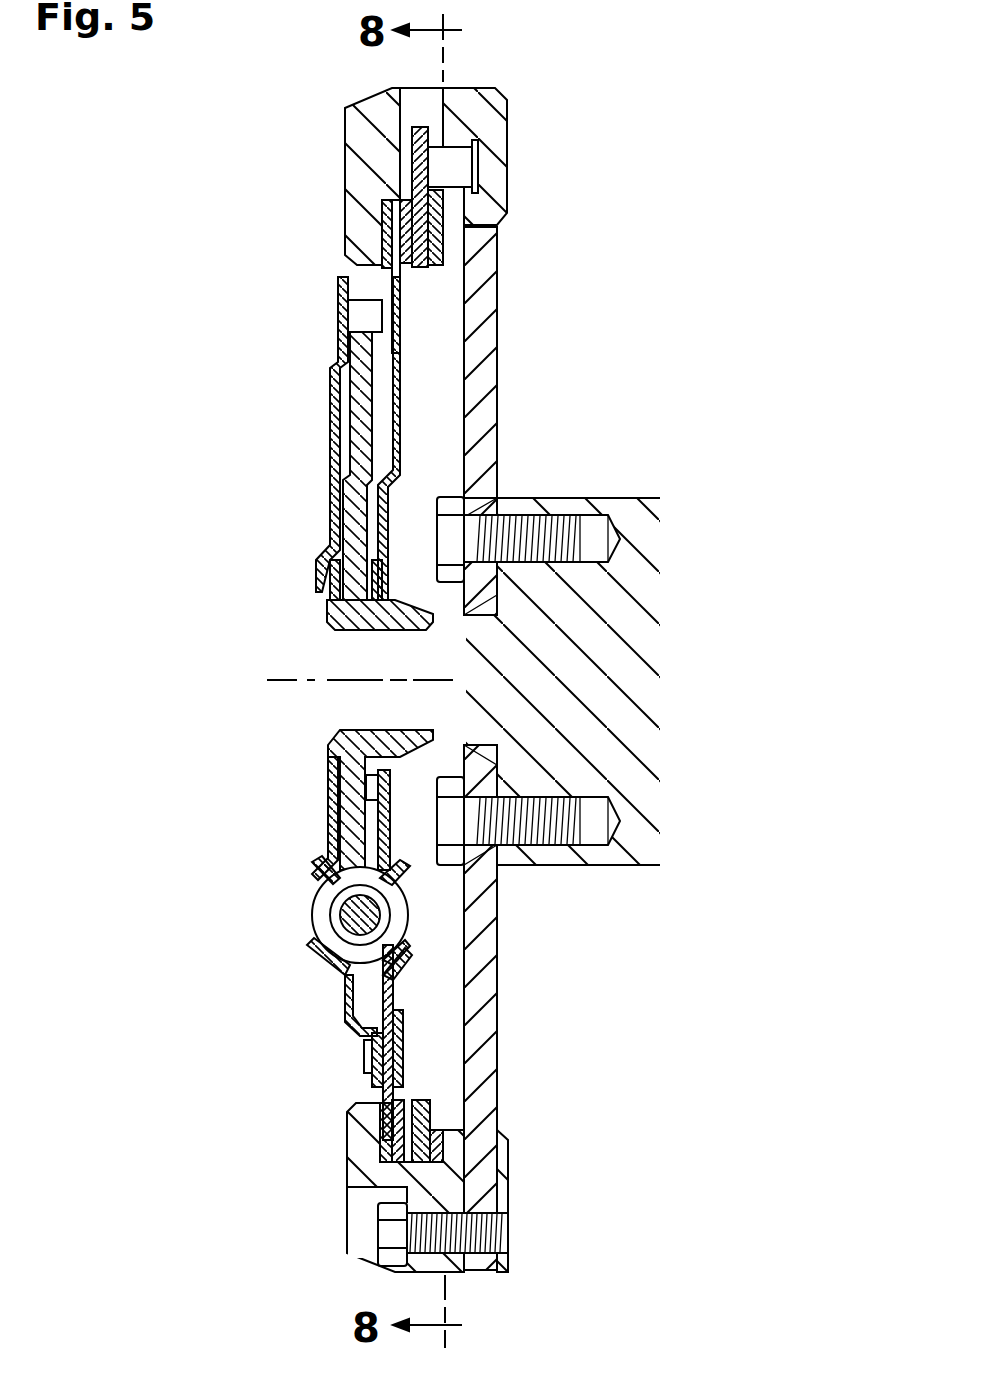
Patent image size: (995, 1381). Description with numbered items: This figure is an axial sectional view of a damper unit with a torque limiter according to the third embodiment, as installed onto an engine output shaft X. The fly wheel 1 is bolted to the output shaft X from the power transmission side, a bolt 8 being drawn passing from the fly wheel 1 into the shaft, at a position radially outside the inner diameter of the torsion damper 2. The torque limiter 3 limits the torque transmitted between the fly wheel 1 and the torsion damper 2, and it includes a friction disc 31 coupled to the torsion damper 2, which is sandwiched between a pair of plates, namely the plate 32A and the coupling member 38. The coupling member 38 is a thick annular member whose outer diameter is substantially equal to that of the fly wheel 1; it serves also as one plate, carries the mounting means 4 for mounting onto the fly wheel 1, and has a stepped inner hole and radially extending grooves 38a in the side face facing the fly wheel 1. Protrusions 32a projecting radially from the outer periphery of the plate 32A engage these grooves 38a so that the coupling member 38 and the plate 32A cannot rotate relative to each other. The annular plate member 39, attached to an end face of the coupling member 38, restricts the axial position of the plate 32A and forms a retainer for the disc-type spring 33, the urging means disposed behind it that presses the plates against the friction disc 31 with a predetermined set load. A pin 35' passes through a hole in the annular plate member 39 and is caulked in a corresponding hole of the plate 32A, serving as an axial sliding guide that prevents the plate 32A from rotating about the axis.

The fly wheel 1 is at (494, 395).
The torsion damper 2 is at (339, 935).
The torque limiter 3 is at (402, 342).
The mounting means 4 is at (385, 1227).
The mounting bolt 8 is at (440, 497).
The friction disc 31 is at (405, 1088).
The protrusions 32a is at (412, 135).
The plate 32A is at (445, 262).
The disc-type spring 33 is at (468, 1100).
The pin 35' is at (502, 166).
The coupling member 38 is at (345, 172).
The grooves 38a is at (402, 108).
The annular plate member 39 is at (464, 1185).
The output shaft X is at (620, 498).